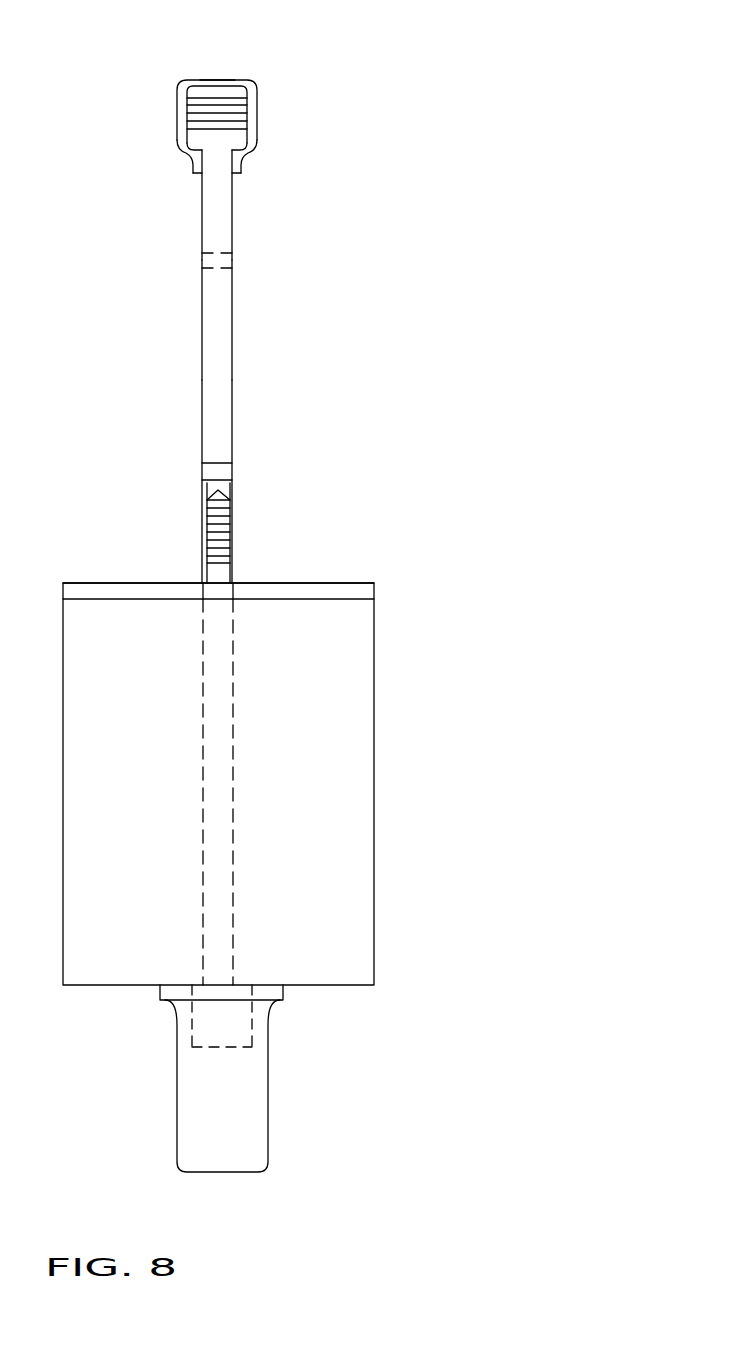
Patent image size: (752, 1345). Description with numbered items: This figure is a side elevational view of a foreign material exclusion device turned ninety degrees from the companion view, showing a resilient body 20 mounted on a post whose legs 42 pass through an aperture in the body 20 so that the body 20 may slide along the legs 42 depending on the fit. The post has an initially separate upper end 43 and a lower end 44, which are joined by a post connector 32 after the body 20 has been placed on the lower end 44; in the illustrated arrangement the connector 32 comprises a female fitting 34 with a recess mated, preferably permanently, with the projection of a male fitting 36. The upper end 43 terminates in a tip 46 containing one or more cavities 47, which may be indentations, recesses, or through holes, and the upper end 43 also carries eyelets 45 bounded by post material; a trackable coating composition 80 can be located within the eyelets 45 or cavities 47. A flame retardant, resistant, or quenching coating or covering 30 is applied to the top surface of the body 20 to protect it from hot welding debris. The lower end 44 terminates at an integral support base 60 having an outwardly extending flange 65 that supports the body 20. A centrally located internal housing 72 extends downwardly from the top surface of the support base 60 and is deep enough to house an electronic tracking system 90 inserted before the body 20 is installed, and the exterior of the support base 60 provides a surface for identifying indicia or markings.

The body 20 is at (288, 784).
The flame retardant coating or covering 30 is at (274, 544).
The post connector 32 is at (171, 523).
The female fitting 34 is at (266, 472).
The male fitting 36 is at (286, 531).
The leg 42 is at (280, 429).
The upper end 43 is at (284, 309).
The lower end 44 is at (342, 792).
The eyelet 45 is at (238, 171).
The tip 46 is at (239, 49).
The cavity 47 is at (318, 123).
The support base 60 is at (155, 1086).
The flange 65 is at (309, 1023).
The internal housing 72 is at (146, 1023).
The trackable coating composition 80 is at (268, 110).
The electronic tracking system 90 is at (286, 1089).